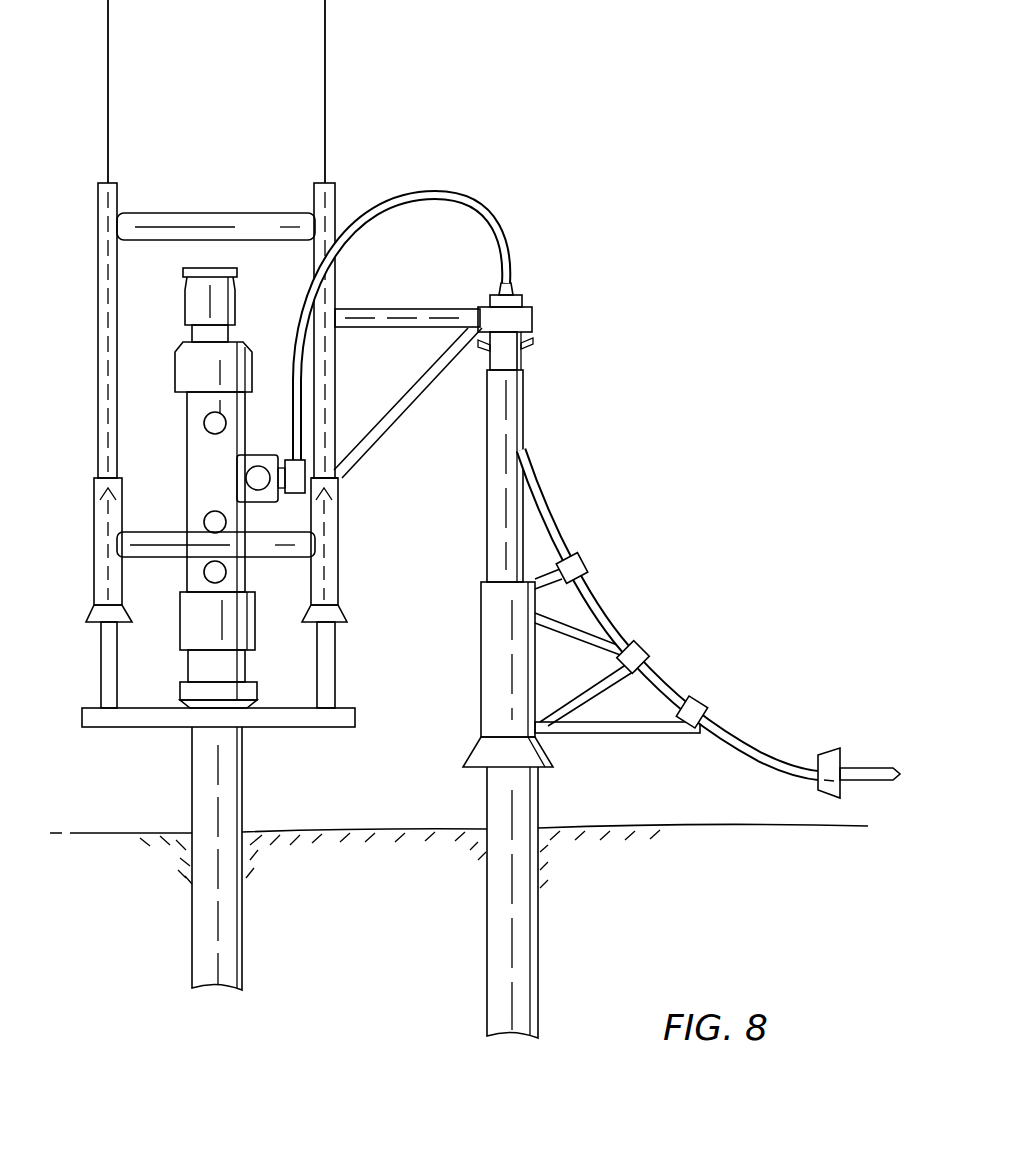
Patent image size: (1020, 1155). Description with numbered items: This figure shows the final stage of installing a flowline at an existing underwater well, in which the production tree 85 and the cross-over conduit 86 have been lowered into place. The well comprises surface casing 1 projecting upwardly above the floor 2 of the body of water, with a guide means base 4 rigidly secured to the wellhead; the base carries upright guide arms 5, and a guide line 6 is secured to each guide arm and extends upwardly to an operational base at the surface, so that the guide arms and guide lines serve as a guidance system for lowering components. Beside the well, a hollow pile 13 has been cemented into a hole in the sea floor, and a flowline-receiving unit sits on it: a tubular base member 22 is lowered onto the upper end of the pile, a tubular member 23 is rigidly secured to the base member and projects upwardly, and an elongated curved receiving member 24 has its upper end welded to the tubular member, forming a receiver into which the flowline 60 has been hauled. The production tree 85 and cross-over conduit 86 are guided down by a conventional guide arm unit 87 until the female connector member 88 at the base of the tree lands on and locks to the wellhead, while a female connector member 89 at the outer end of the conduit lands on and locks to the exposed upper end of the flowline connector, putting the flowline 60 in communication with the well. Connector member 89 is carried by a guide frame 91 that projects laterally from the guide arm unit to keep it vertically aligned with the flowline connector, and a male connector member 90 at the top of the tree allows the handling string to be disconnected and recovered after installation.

The surface casing 1 is at (241, 785).
The floor of the body of water 2 is at (152, 832).
The guide means base 4 is at (122, 730).
The guide arms 5 is at (97, 669).
The guide line 6 is at (110, 100).
The hollow pile 13 is at (492, 818).
The tubular base member 22 is at (483, 708).
The tubular member 23 is at (486, 470).
The receiving member 24 is at (618, 622).
The flowline 60 is at (878, 768).
The production tree 85 is at (187, 450).
The cross-over conduit 86 is at (447, 190).
The guide arm unit 87 is at (345, 484).
The female connector member 88 is at (256, 622).
The female connector member 89 is at (534, 292).
The male connector member 90 is at (240, 298).
The guide frame 91 is at (418, 308).